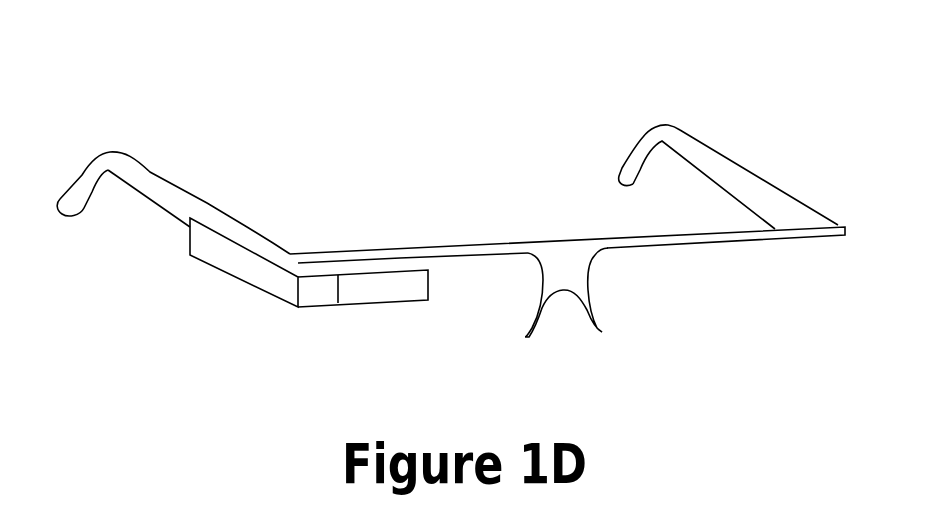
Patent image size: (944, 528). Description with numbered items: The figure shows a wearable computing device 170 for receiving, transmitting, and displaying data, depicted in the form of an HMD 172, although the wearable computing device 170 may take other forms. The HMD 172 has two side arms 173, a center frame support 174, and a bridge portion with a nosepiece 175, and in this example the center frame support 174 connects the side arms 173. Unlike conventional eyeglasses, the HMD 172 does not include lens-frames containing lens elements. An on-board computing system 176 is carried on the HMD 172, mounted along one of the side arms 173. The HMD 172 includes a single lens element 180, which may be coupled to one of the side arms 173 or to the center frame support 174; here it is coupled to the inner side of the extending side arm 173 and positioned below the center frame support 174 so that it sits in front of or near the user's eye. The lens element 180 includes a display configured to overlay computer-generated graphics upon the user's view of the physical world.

The wearable computing device 170 is at (466, 117).
The HMD 172 is at (735, 135).
The side arms 173 is at (155, 193).
The center frame support 174 is at (470, 250).
The nosepiece 175 is at (585, 287).
The on-board computing system 176 is at (223, 272).
The single lens element 180 is at (387, 302).